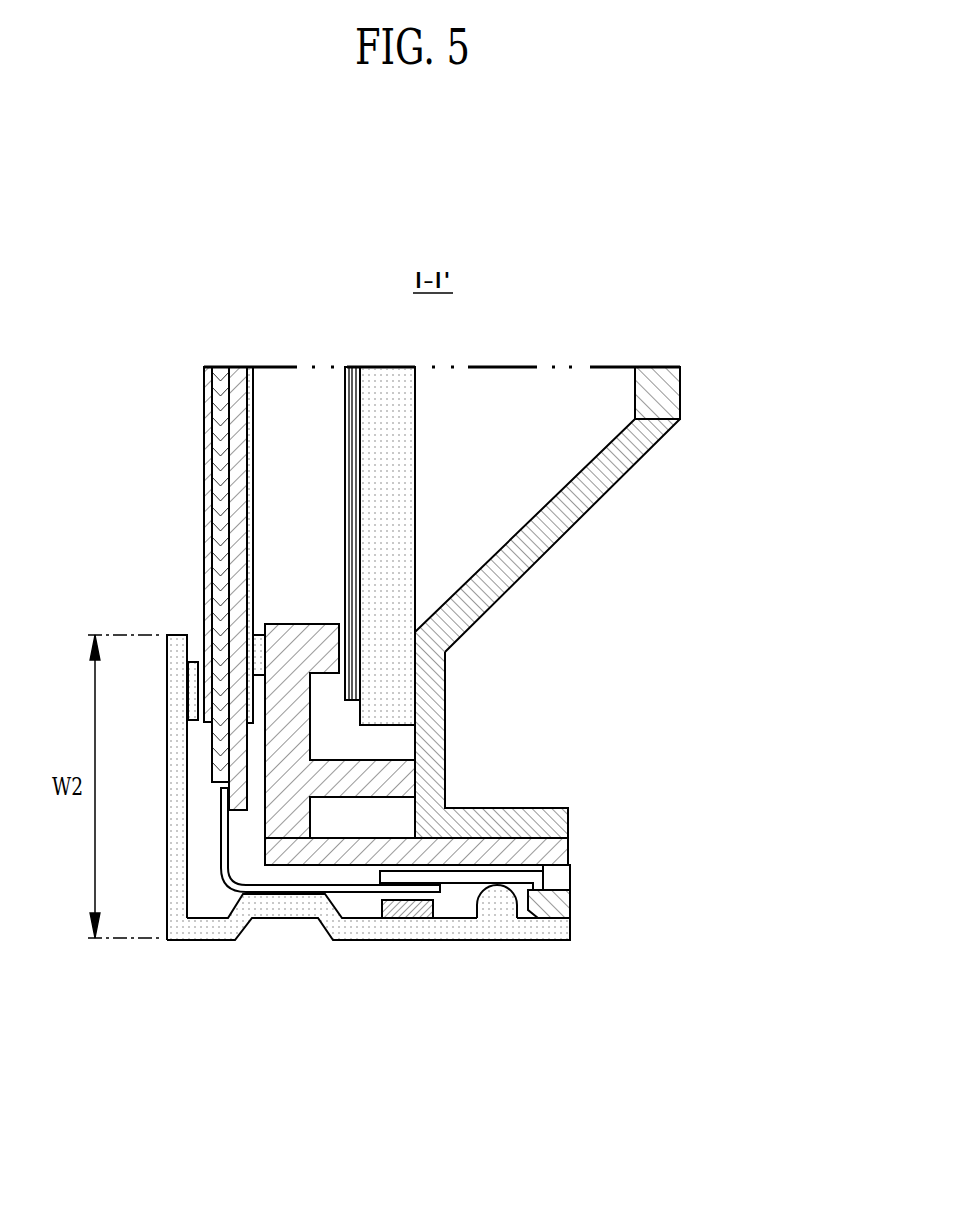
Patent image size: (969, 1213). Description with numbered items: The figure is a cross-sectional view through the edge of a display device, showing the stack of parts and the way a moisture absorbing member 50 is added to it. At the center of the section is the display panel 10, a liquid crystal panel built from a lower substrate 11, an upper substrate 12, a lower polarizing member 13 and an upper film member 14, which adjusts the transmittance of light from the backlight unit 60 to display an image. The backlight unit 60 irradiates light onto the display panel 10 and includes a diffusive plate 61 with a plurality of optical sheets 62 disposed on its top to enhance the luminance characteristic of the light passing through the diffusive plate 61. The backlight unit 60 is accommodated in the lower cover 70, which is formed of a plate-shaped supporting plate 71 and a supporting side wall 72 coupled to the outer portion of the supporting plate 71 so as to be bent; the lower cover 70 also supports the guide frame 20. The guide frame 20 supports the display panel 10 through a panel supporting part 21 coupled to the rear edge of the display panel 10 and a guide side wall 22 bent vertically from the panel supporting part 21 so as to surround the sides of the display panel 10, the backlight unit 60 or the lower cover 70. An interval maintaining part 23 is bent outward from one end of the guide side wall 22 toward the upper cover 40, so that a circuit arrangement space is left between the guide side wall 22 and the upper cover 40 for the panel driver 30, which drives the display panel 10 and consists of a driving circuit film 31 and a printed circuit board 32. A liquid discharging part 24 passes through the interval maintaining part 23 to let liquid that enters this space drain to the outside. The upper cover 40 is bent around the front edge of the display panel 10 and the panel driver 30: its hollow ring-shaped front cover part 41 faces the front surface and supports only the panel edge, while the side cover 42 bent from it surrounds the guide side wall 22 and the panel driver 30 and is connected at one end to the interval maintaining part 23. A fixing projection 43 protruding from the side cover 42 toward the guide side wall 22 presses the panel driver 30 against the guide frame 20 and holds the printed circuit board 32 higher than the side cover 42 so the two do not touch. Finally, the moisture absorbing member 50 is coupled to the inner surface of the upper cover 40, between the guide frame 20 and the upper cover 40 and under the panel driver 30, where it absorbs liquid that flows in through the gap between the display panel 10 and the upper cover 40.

The display panel 10 is at (174, 588).
The lower substrate 11 is at (237, 436).
The upper substrate 12 is at (220, 482).
The lower polarizing member 13 is at (148, 532).
The upper film member 14 is at (207, 523).
The guide frame 20 is at (478, 771).
The panel supporting part 21 is at (290, 737).
The guide side wall 22 is at (480, 853).
The interval maintaining part 23 is at (560, 852).
The liquid discharging part 24 is at (582, 891).
The panel driver 30 is at (382, 920).
The driving circuit film 31 is at (318, 890).
The printed circuit board 32 is at (392, 878).
The upper cover 40 is at (341, 844).
The front cover part 41 is at (172, 880).
The side cover 42 is at (215, 928).
The fixing projection 43 is at (497, 903).
The moisture absorbing member 50 is at (407, 910).
The backlight unit 60 is at (504, 546).
The diffusive plate 61 is at (393, 535).
The optical sheets 62 is at (353, 570).
The lower cover 70 is at (599, 509).
The supporting plate 71 is at (663, 387).
The supporting side wall 72 is at (572, 535).